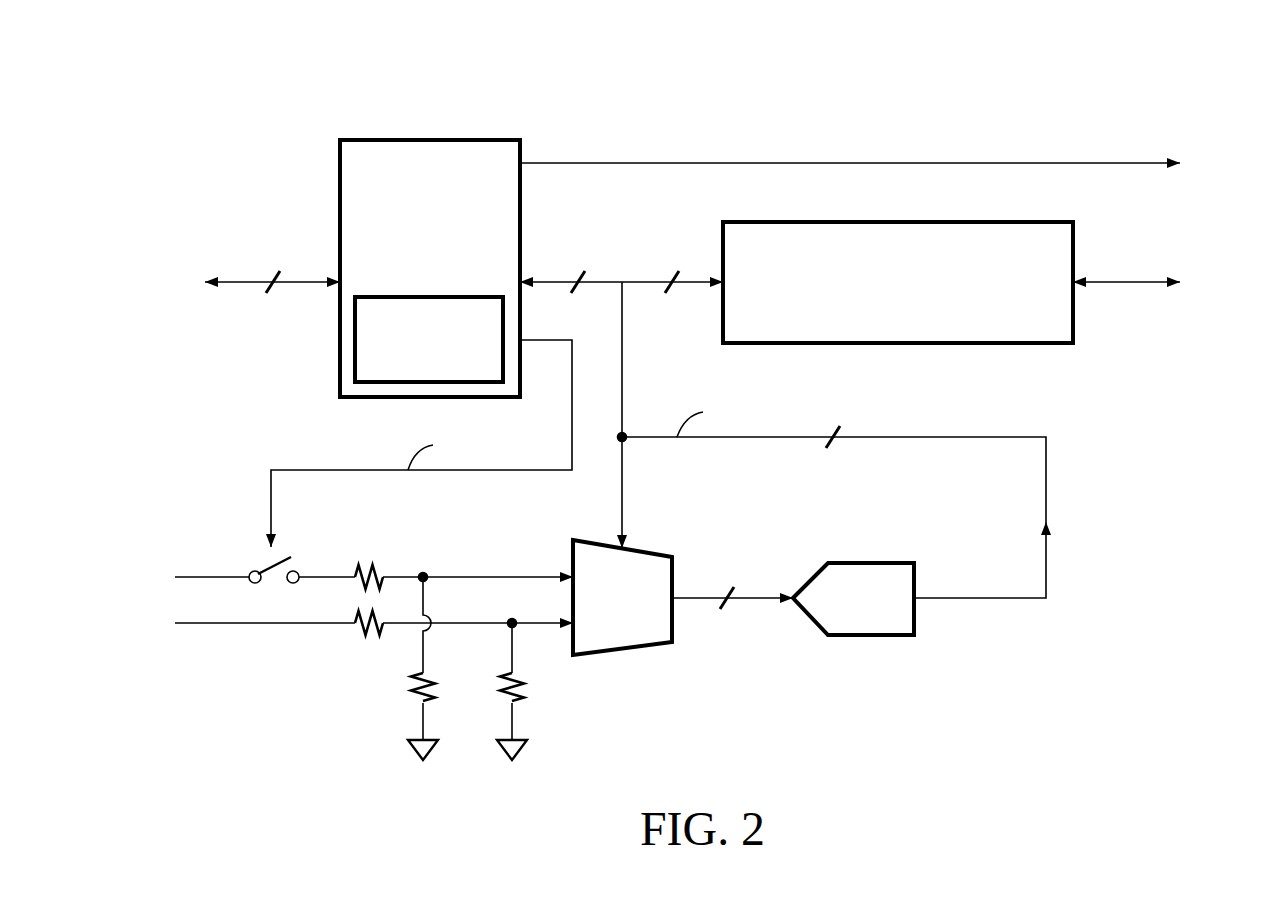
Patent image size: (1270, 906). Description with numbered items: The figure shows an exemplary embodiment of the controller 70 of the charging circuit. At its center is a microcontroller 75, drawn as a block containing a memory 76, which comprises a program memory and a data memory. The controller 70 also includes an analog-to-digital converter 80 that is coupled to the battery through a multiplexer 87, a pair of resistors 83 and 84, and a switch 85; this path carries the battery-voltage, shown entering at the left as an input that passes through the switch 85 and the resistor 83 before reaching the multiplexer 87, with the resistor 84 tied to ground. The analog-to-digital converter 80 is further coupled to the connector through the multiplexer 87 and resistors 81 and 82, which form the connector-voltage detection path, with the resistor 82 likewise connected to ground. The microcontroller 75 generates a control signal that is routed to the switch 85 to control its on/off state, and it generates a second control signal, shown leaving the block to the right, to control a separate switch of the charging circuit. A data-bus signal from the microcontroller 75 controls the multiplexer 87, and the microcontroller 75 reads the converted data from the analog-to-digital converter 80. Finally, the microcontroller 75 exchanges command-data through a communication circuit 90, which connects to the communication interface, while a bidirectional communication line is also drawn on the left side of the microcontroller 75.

The controller 70 is at (1255, 96).
The microcontroller 75 is at (348, 140).
The memory 76 is at (447, 356).
The communication circuit 90 is at (731, 222).
The multiplexer 87 is at (652, 553).
The analog-to-digital converter 80 is at (868, 562).
The switch 85 is at (263, 558).
The resistor 83 is at (372, 557).
The resistor 81 is at (370, 640).
The resistor 84 is at (403, 690).
The resistor 82 is at (532, 690).